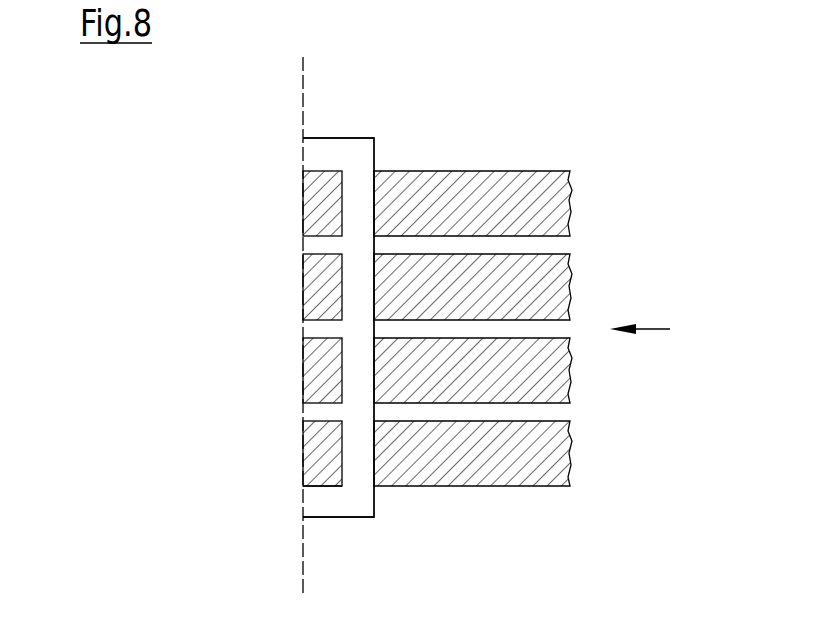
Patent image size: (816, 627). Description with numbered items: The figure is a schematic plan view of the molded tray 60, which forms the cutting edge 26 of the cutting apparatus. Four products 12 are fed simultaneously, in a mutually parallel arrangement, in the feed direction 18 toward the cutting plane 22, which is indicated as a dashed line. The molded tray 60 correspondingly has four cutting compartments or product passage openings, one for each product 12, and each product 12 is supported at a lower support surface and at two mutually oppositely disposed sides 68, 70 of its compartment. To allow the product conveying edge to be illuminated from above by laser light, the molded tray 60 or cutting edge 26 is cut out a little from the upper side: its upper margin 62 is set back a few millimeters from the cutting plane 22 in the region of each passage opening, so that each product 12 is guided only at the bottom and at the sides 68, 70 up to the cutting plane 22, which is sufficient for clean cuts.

The products 12 is at (518, 192).
The feed direction 18 is at (645, 313).
The cutting plane 22 is at (300, 548).
The cutting edge 26 is at (391, 281).
The molded tray 60 is at (378, 112).
The upper margin 62 is at (340, 205).
The side 68 is at (302, 431).
The side 70 is at (305, 484).